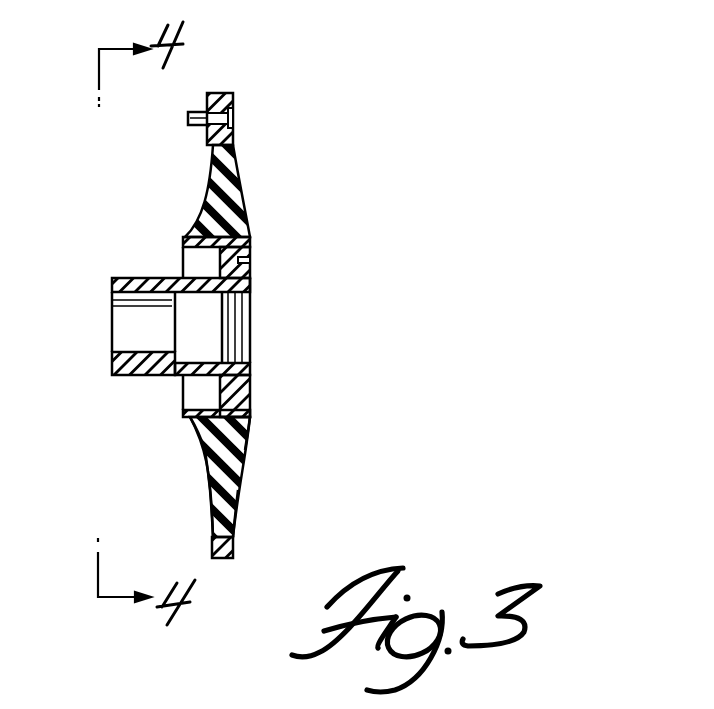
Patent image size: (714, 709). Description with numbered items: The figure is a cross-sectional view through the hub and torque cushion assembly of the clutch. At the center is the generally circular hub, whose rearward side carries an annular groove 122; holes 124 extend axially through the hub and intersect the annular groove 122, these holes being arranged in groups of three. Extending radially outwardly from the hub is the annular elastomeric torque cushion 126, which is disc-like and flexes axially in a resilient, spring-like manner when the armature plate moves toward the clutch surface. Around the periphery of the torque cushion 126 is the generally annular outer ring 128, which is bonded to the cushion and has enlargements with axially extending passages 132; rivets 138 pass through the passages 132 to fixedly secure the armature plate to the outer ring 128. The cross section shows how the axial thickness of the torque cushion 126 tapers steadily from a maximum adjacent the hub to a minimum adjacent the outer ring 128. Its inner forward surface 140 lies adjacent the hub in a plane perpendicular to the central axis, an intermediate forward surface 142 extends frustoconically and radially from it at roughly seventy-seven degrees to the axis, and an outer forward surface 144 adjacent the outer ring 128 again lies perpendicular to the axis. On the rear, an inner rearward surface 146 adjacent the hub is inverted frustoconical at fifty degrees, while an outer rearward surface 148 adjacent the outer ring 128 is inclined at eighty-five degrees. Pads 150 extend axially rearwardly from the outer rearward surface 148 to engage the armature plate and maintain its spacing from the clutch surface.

The annular groove 122 is at (183, 252).
The holes 124 is at (250, 262).
The torque cushion 126 is at (248, 166).
The outer ring 128 is at (213, 92).
The passages 132 is at (238, 110).
The rivets 138 is at (188, 118).
The inner forward surface 140 is at (248, 432).
The intermediate forward surface 142 is at (241, 471).
The outer forward surface 144 is at (233, 525).
The inner rearward surface 146 is at (193, 430).
The outer rearward surface 148 is at (213, 500).
The pads 150 is at (207, 452).